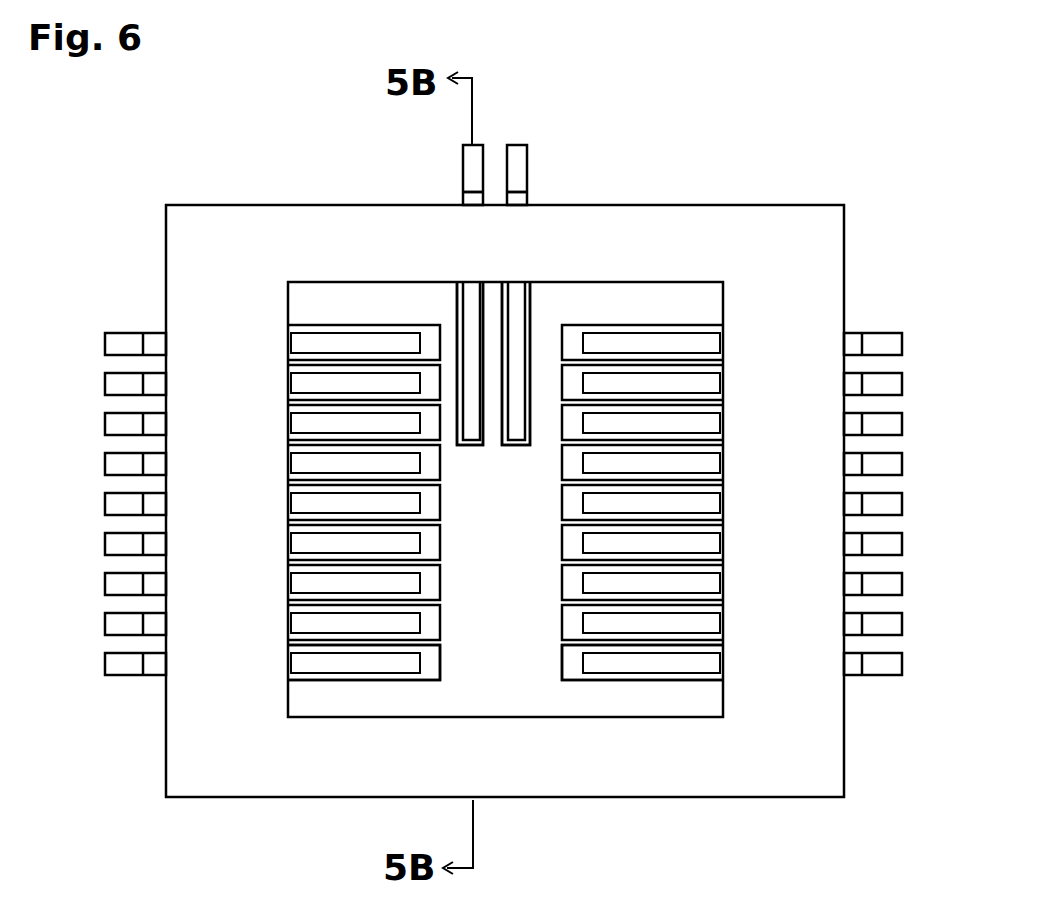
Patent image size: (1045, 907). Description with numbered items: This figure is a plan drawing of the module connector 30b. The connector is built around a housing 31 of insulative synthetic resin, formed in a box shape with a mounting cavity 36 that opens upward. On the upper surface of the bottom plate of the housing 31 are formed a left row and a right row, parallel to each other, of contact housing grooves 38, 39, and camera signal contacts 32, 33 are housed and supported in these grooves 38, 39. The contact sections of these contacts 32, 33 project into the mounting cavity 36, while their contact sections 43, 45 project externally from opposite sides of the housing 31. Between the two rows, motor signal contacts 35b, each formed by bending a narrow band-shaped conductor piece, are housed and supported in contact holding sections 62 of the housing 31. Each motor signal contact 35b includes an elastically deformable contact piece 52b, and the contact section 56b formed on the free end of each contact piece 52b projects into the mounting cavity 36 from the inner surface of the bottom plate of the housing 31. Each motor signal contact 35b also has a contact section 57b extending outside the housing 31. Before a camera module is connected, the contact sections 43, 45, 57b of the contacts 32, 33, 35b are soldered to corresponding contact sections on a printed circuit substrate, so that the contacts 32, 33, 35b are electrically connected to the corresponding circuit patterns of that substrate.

The module connector 30b is at (501, 463).
The housing 31 is at (182, 784).
The camera signal contact 32 is at (323, 668).
The camera signal contact 33 is at (655, 668).
The motor signal contact 35b is at (430, 152).
The mounting cavity 36 is at (303, 297).
The contact housing groove 38 is at (438, 672).
The contact housing groove 39 is at (562, 660).
The contact section 43 is at (126, 672).
The contact section 45 is at (887, 674).
The contact piece 52b is at (515, 445).
The contact section 56b is at (462, 315).
The contact section 57b is at (463, 168).
The contact holding section 62 is at (497, 440).